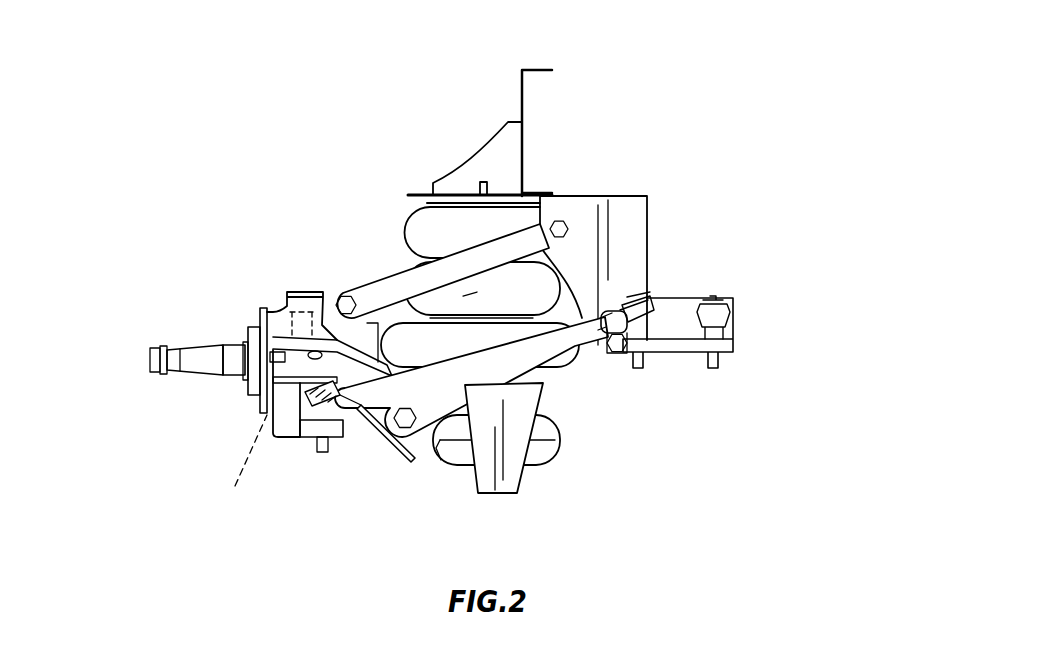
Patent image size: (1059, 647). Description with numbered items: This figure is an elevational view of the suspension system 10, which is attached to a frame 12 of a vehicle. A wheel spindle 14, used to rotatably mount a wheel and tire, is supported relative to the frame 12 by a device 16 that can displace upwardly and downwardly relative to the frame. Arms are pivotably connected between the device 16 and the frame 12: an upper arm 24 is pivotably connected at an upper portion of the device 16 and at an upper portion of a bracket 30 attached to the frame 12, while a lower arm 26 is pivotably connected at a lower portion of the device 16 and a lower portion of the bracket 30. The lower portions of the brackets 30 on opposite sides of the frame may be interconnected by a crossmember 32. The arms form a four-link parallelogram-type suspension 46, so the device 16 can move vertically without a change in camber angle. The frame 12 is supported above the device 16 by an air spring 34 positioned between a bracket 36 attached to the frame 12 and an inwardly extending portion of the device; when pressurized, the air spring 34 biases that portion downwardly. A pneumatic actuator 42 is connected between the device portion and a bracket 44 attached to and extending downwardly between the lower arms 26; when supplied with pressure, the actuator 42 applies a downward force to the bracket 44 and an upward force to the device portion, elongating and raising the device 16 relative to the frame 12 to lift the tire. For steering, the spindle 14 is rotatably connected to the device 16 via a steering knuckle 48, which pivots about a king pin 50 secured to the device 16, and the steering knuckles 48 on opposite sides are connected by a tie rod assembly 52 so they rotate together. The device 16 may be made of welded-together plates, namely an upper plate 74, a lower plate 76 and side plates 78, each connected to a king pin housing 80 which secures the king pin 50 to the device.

The suspension system 10 is at (752, 78).
The frame 12 is at (543, 68).
The wheel spindle 14 is at (205, 378).
The device 16 is at (367, 413).
The upper arm 24 is at (392, 272).
The lower arm 26 is at (580, 368).
The bracket 30 is at (648, 240).
The crossmember 32 is at (687, 297).
The air spring 34 is at (405, 215).
The bracket 36 is at (488, 145).
The pneumatic actuator 42 is at (562, 435).
The bracket 44 is at (508, 497).
The parallelogram-type suspension 46 is at (365, 272).
The steering knuckle 48 is at (287, 307).
The king pin 50 is at (237, 464).
The tie rod assembly 52 is at (441, 440).
The upper plate 74 is at (484, 287).
The lower plate 76 is at (388, 445).
The side plate 78 is at (377, 430).
The king pin housing 80 is at (252, 370).